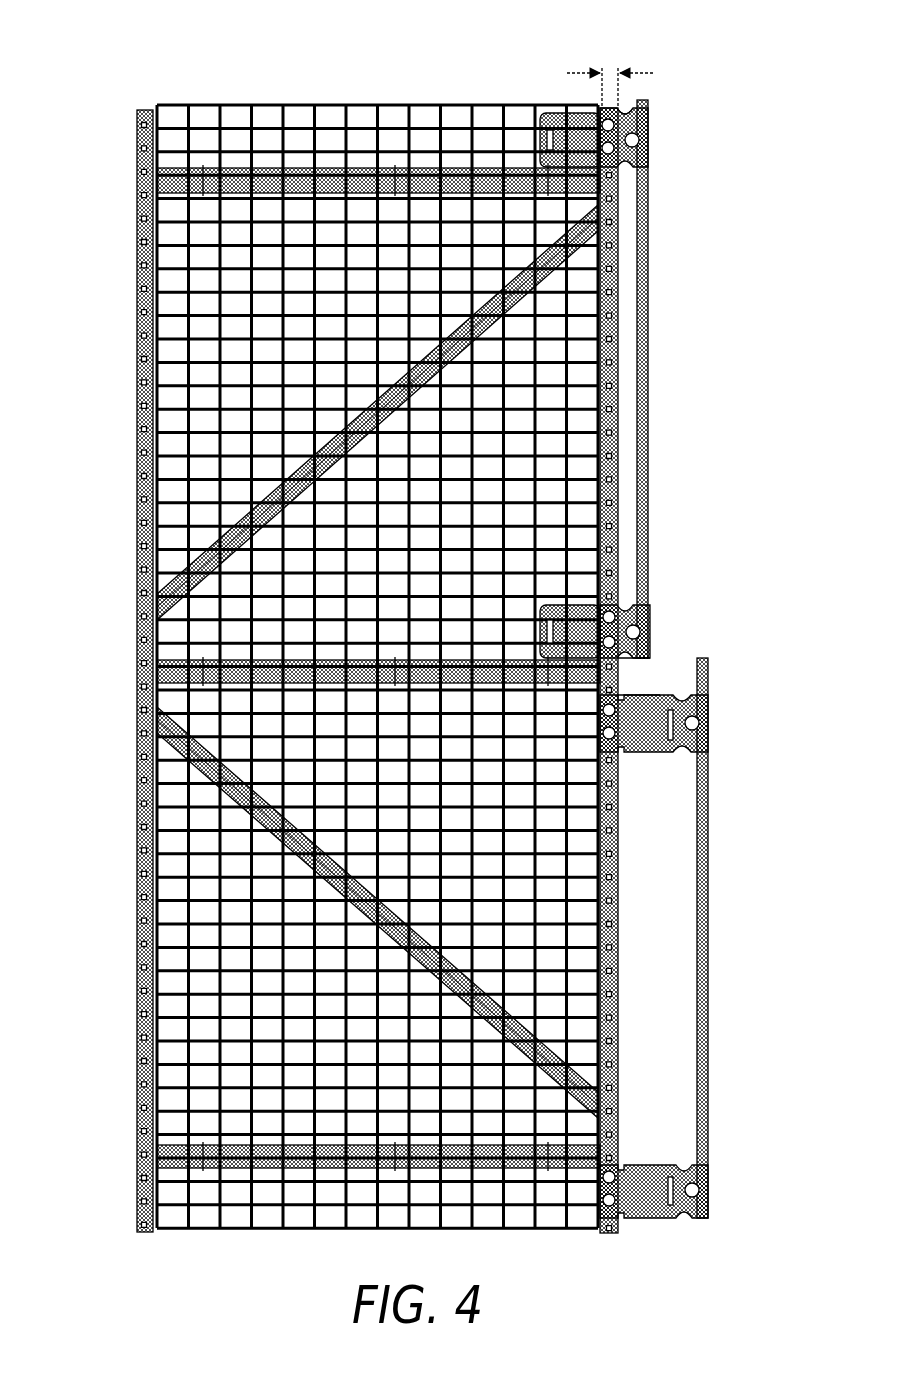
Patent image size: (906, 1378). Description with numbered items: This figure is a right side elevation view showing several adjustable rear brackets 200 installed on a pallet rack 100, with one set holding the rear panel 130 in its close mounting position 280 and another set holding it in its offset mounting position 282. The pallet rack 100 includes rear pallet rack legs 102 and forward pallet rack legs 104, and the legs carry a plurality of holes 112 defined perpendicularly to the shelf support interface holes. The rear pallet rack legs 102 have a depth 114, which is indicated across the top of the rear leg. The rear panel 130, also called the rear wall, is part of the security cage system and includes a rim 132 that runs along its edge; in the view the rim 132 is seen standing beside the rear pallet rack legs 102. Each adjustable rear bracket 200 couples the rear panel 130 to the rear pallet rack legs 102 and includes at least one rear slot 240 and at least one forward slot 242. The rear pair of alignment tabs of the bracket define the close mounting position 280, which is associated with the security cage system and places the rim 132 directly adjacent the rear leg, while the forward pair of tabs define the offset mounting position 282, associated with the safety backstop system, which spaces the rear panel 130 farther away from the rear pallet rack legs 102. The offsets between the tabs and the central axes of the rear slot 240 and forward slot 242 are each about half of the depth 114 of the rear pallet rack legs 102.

The pallet rack 100 is at (110, 1062).
The rear pallet rack legs 102 is at (693, 691).
The forward pallet rack legs 104 is at (137, 1226).
The holes 112 is at (612, 1064).
The depth 114 is at (578, 70).
The rear panel 130 is at (716, 659).
The rim 132 is at (645, 185).
The adjustable rear bracket 200 is at (680, 663).
The rear slot 240 is at (673, 752).
The forward slot 242 is at (553, 615).
The close mounting position 280 is at (627, 107).
The offset mounting position 282 is at (665, 657).